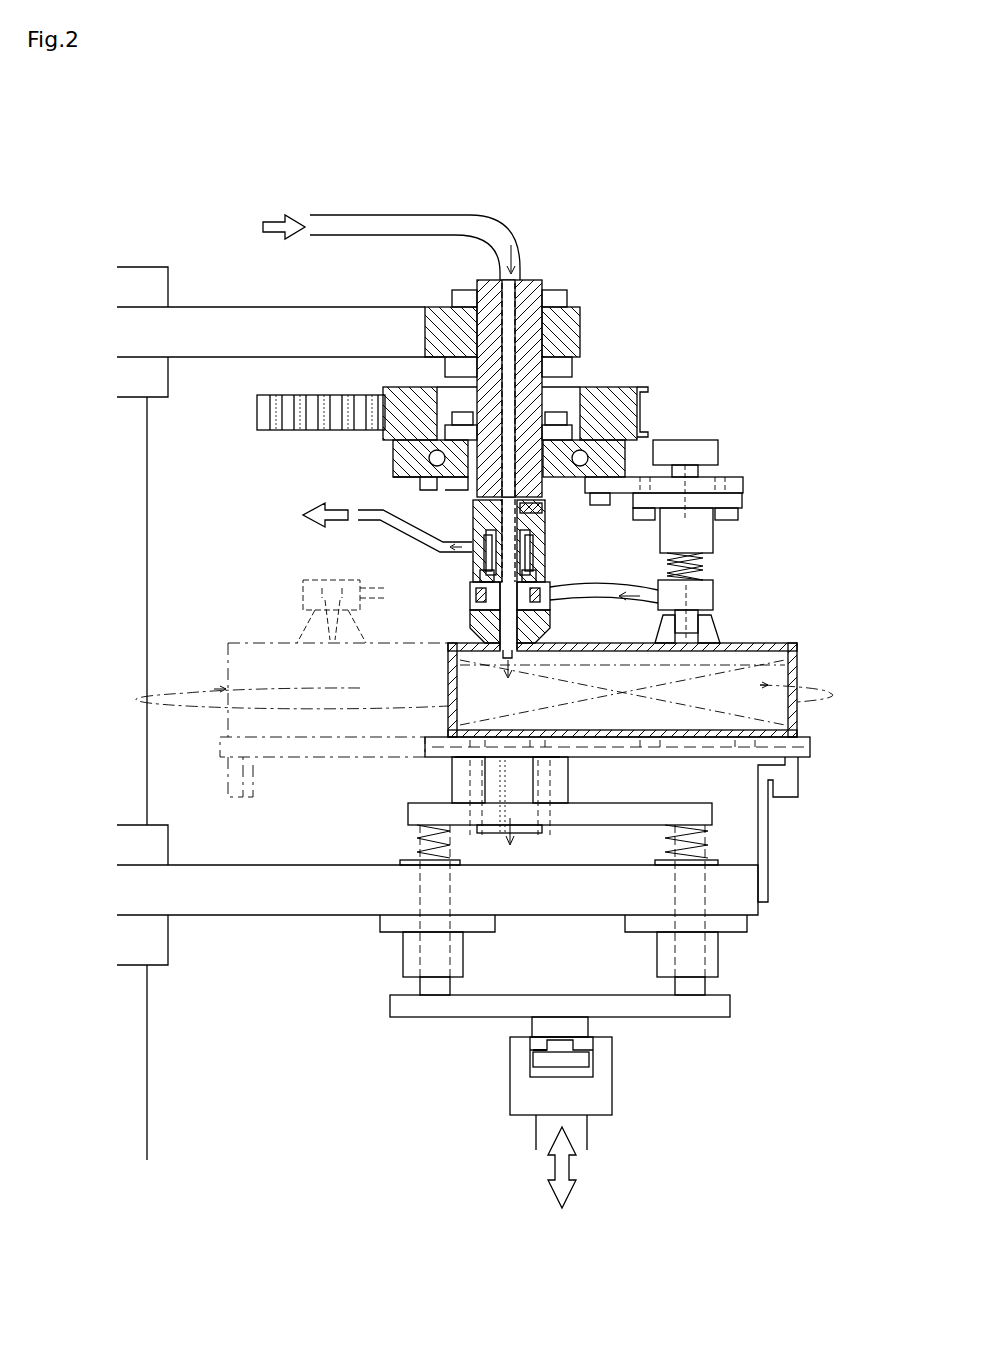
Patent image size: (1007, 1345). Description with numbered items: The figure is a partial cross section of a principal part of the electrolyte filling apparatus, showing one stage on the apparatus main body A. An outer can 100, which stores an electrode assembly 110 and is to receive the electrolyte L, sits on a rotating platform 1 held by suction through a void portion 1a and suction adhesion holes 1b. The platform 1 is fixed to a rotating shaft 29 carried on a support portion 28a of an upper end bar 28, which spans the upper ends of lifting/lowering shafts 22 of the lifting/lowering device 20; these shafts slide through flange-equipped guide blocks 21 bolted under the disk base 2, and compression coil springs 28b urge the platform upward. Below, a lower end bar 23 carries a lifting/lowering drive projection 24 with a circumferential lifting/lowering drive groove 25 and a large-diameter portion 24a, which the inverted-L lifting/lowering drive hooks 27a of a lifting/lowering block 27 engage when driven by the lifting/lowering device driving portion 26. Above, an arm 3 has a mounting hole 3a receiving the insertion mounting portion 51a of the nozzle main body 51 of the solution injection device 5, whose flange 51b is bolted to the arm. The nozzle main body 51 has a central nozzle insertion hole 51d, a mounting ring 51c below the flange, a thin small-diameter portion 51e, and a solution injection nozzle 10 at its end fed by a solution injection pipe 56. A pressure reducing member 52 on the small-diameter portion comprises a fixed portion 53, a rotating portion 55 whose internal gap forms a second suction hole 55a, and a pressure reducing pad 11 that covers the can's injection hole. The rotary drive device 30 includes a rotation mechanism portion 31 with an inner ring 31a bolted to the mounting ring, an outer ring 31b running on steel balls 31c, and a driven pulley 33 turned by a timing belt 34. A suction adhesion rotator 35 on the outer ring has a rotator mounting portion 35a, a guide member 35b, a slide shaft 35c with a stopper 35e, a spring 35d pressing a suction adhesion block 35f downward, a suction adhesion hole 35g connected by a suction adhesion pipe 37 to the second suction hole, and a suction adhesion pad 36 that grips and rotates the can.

The rotating platform 1 is at (630, 815).
The void portion 1a is at (702, 758).
The suction adhesion holes 1b is at (725, 760).
The disk base 2 is at (285, 890).
The arm 3 is at (350, 322).
The mounting hole 3a is at (565, 328).
The solution injection device 5 is at (598, 552).
The solution injection nozzle 10 is at (480, 628).
The pressure reducing pad 11 is at (480, 605).
The lifting/lowering device 20 is at (565, 1016).
The flange-equipped guide block 21 is at (405, 960).
The lifting/lowering shaft 22 is at (450, 988).
The lower end bar 23 is at (470, 1010).
The lifting/lowering drive projection 24 is at (555, 1022).
The large-diameter portion 24a is at (575, 1060).
The lifting/lowering drive groove 25 is at (580, 1048).
The lifting/lowering device driving portion 26 is at (540, 1130).
The lifting/lowering block 27 is at (557, 1084).
The lifting/lowering drive hook 27a is at (540, 1047).
The upper end bar 28 is at (535, 811).
The support portion 28a is at (560, 800).
The compression coil spring 28b is at (418, 835).
The rotating shaft 29 is at (519, 811).
The rotary drive device 30 is at (368, 488).
The rotation mechanism portion 31 is at (472, 477).
The inner ring 31a is at (448, 482).
The outer ring 31b is at (418, 482).
The steel balls 31c is at (648, 412).
The driven pulley 33 is at (410, 388).
The timing belt 34 is at (277, 432).
The suction adhesion rotator 35 is at (703, 533).
The rotator mounting portion 35a is at (710, 482).
The guide member 35b is at (710, 530).
The slide shaft 35c is at (700, 567).
The spring 35d is at (668, 570).
The stopper 35e is at (705, 455).
The suction adhesion block 35f is at (712, 588).
The suction adhesion hole 35g is at (678, 600).
The suction adhesion pad 36 is at (715, 625).
The suction adhesion pipe 37 is at (582, 603).
The nozzle main body 51 is at (540, 403).
The insertion mounting portion 51a is at (458, 292).
The flange 51b is at (566, 367).
The mounting ring 51c is at (558, 424).
The nozzle insertion hole 51d is at (512, 292).
The small-diameter portion 51e is at (478, 578).
The pressure reducing member 52 is at (548, 522).
The fixed portion 53 is at (546, 548).
The rotating portion 55 is at (506, 569).
The second suction hole 55a is at (540, 584).
The solution injection pipe 56 is at (418, 213).
The outer can 100 is at (596, 690).
The electrode assembly 110 is at (452, 694).
The apparatus main body A is at (165, 515).
The electrolyte L is at (512, 668).